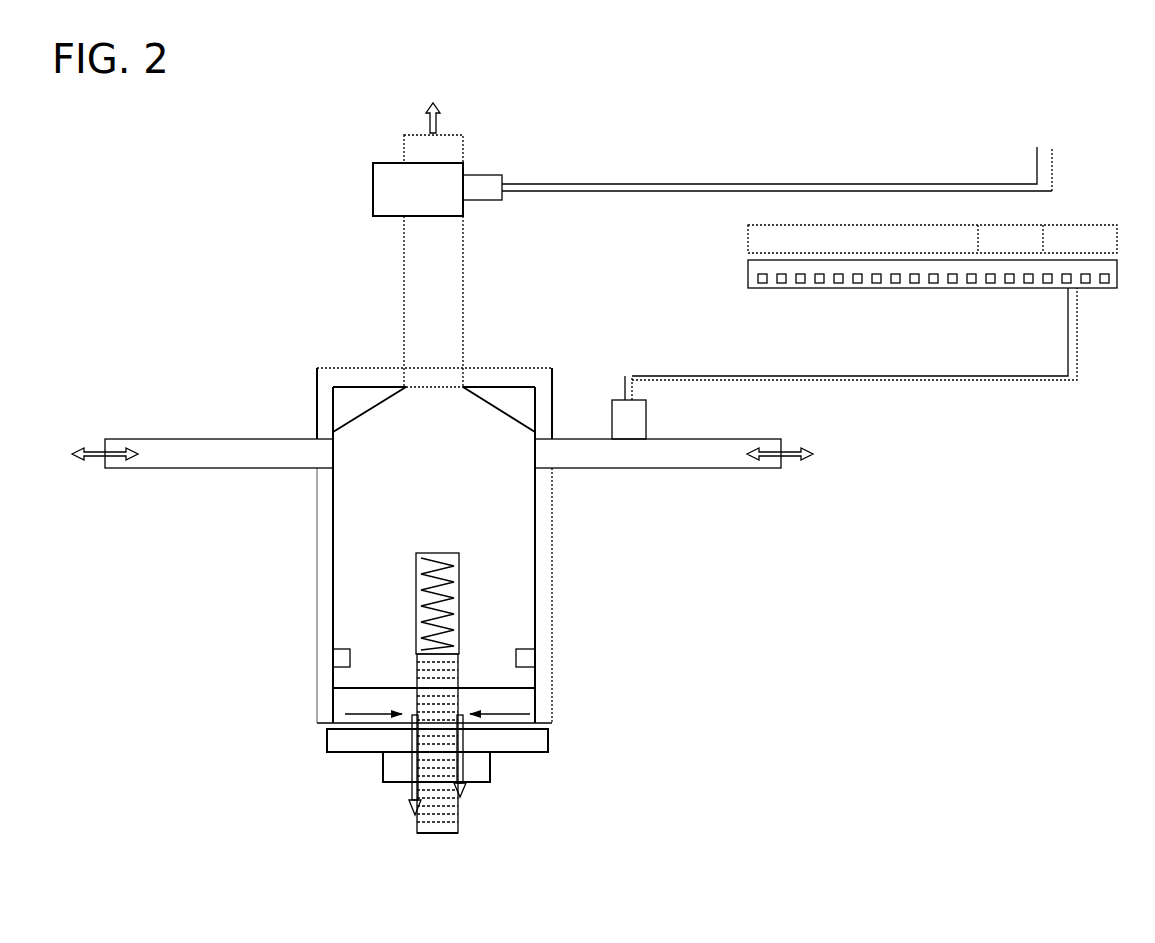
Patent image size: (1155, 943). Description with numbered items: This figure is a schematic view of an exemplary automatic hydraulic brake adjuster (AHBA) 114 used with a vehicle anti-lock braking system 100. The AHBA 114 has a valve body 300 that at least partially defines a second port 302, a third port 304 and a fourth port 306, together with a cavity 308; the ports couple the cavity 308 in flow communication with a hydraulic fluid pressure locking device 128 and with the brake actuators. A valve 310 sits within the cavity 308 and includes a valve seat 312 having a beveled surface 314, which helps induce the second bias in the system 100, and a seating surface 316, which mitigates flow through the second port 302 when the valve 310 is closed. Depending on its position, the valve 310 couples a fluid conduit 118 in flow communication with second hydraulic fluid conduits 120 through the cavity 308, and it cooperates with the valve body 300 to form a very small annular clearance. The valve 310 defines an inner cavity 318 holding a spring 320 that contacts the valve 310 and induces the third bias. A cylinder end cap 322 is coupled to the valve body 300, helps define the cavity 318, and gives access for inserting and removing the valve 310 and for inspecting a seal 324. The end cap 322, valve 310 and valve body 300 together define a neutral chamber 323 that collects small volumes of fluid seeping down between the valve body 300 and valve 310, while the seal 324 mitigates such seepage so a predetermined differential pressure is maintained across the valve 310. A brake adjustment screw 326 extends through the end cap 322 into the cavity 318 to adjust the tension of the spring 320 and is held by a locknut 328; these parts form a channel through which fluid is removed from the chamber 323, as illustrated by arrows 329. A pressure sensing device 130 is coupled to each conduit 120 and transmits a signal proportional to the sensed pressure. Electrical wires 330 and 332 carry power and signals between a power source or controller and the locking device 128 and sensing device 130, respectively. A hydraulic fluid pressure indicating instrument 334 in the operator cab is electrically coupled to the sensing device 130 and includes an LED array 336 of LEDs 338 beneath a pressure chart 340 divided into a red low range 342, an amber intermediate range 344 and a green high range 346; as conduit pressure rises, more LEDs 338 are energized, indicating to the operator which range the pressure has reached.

The vehicle anti-lock braking system 100 is at (228, 143).
The automatic hydraulic brake adjuster 114 is at (257, 212).
The fluid conduit 118 is at (415, 297).
The second hydraulic fluid conduits 120 is at (193, 433).
The hydraulic fluid pressure locking device 128 is at (466, 165).
The pressure sensing device 130 is at (618, 398).
The valve body 300 is at (543, 543).
The second port 302 is at (453, 380).
The third port 304 is at (545, 452).
The fourth port 306 is at (332, 450).
The cavity 308 is at (358, 398).
The valve 310 is at (437, 480).
The valve seat 312 is at (472, 380).
The beveled surface 314 is at (500, 415).
The seating surface 316 is at (433, 389).
The cavity 318 is at (415, 587).
The spring 320 is at (432, 607).
The cylinder end cap 322 is at (551, 739).
The neutral chamber 323 is at (358, 705).
The seal 324 is at (342, 662).
The brake adjustment screw 326 is at (471, 808).
The locknut 328 is at (493, 763).
The arrows 329 is at (415, 800).
The electrical wire 330 is at (738, 190).
The electrical wire 332 is at (862, 376).
The hydraulic fluid pressure indicating instrument 334 is at (716, 252).
The light emitting diode array 336 is at (767, 290).
The LEDs 338 is at (962, 279).
The pressure chart 340 is at (943, 225).
The red pressure range 342 is at (892, 239).
The intermediate pressure range 344 is at (1013, 239).
The high pressure range 346 is at (1077, 238).